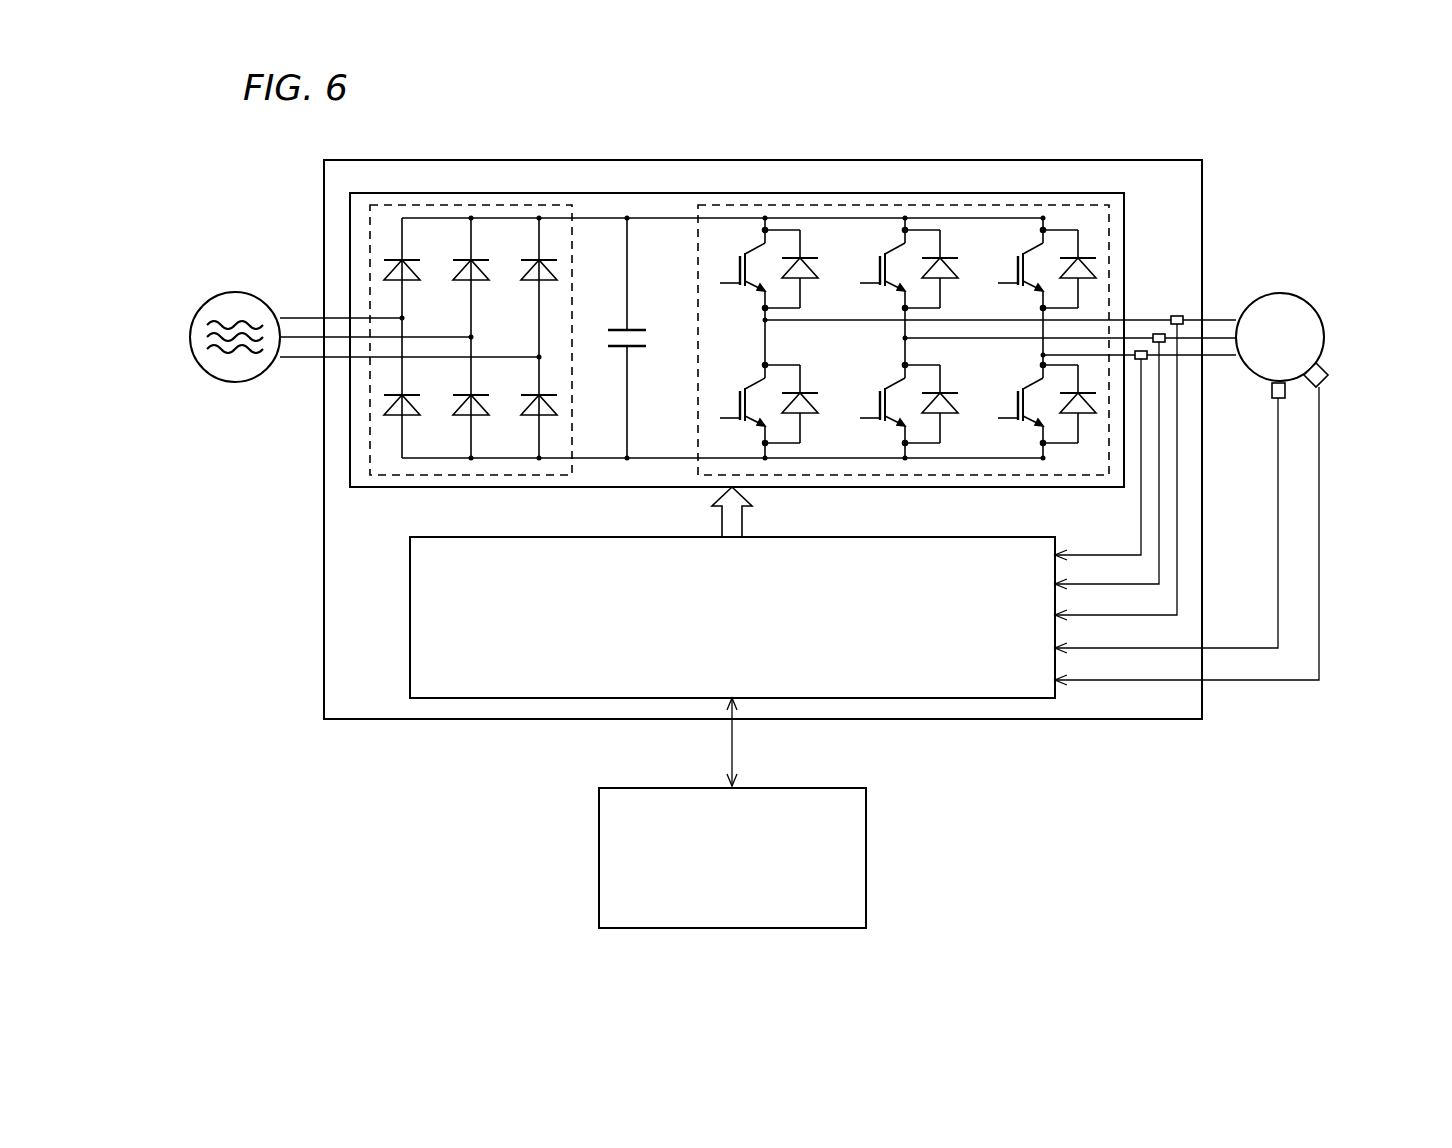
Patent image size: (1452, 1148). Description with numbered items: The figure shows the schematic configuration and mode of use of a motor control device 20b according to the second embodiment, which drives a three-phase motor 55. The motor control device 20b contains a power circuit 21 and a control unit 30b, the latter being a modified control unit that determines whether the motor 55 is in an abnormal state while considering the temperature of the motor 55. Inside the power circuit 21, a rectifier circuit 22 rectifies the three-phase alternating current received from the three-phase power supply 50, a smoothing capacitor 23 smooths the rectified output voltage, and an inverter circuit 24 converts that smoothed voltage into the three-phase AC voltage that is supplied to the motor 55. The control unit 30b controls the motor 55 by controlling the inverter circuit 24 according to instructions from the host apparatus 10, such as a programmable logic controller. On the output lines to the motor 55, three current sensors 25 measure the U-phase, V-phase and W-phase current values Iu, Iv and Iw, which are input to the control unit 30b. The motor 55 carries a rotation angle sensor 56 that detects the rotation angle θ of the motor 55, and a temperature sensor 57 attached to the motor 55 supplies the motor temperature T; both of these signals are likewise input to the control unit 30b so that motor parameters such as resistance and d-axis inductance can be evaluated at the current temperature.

The host apparatus 10 is at (867, 815).
The motor control device 20b is at (1072, 160).
The power circuit 21 is at (787, 193).
The rectifier circuit 22 is at (537, 205).
The smoothing capacitor 23 is at (632, 326).
The inverter circuit 24 is at (745, 205).
The current sensors 25 is at (1178, 315).
The control unit 30b is at (955, 534).
The three-phase power supply 50 is at (235, 293).
The motor 55 is at (1281, 293).
The rotation angle sensor 56 is at (1270, 402).
The temperature sensor 57 is at (1326, 364).